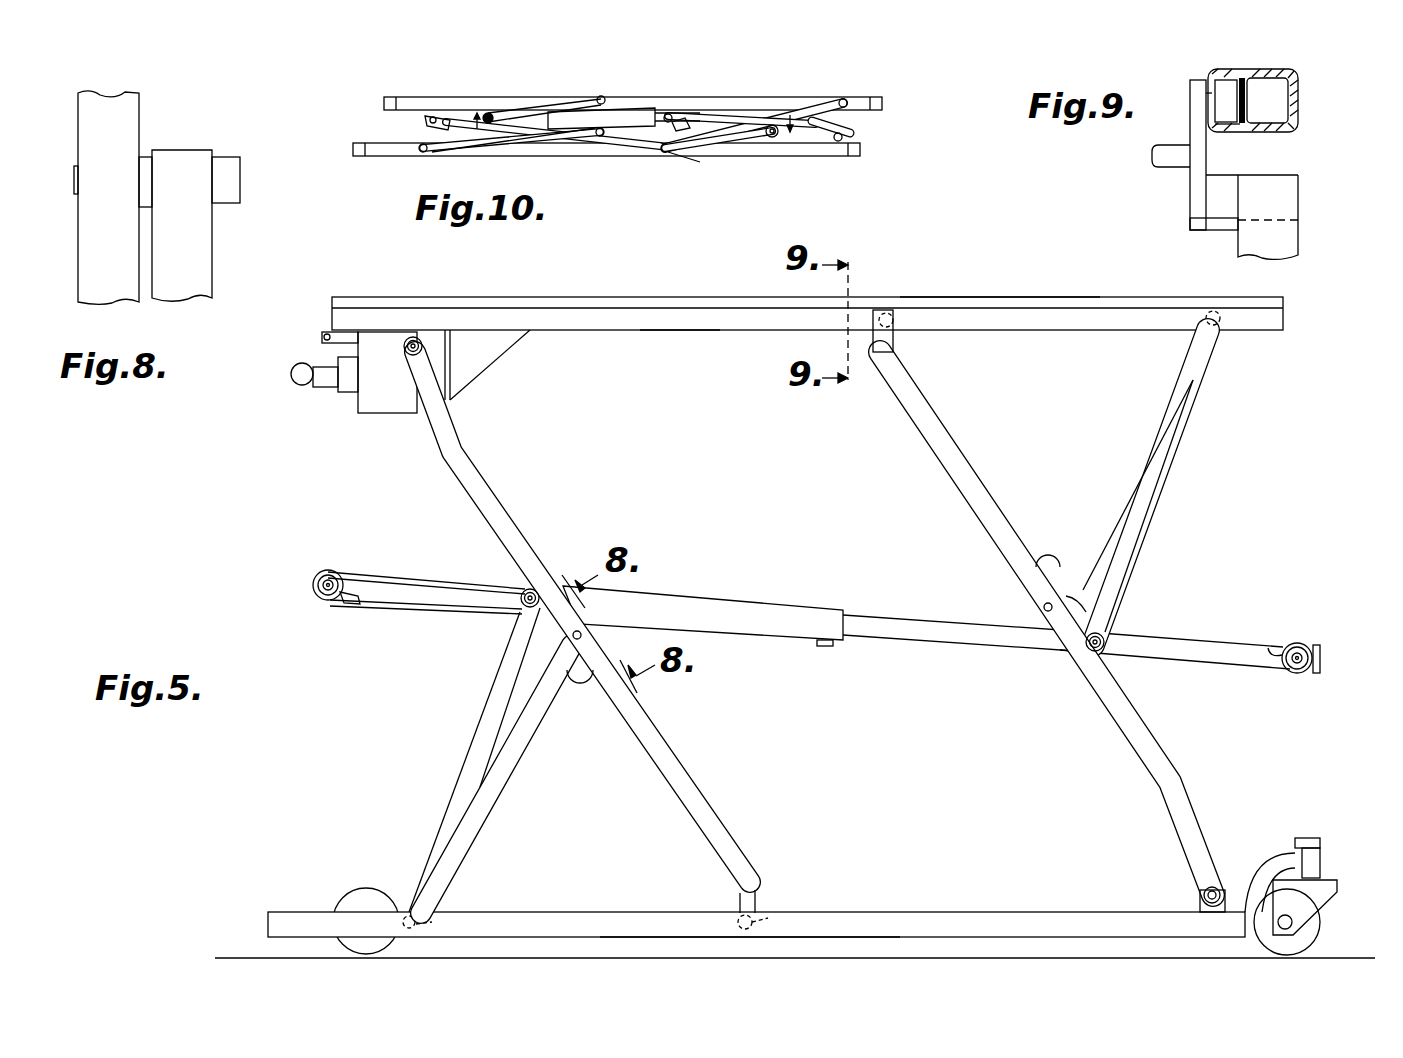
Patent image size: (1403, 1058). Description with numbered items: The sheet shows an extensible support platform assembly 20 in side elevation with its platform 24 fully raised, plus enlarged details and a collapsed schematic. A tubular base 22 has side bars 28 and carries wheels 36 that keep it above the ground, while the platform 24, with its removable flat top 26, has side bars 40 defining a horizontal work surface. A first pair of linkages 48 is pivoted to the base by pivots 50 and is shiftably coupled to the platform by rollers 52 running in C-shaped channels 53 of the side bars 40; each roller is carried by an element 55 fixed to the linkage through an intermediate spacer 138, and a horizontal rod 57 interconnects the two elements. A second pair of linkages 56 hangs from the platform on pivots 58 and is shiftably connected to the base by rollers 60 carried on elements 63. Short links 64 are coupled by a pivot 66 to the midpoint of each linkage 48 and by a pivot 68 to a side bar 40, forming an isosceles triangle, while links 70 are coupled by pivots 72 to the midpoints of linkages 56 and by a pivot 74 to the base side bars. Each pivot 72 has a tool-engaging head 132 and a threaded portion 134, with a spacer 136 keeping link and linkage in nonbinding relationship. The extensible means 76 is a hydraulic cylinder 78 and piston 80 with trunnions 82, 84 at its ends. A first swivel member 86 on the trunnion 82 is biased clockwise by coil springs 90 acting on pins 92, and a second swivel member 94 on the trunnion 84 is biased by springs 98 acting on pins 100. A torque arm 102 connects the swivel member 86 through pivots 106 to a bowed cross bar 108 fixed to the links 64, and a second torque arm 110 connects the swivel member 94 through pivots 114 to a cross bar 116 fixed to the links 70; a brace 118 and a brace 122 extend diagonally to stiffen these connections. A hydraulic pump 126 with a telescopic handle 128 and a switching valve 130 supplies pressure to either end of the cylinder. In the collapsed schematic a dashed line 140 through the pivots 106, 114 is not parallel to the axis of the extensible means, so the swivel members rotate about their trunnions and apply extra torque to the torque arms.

In FIG. 10, the extensible support platform assembly 20 is at (893, 84).
In FIG. 5, the extensible support platform assembly 20 is at (228, 538).
In FIG. 10, the base 22 is at (353, 150).
In FIG. 5, the base 22 is at (266, 912).
In FIG. 10, the platform 24 is at (384, 103).
In FIG. 5, the platform 24 is at (462, 297).
In FIG. 5, the removable flat top 26 is at (1012, 297).
In FIG. 5, the side bars 28 is at (922, 912).
In FIG. 5, the wheels 36 is at (366, 896).
In FIG. 9, the side bars 40 is at (1299, 100).
In FIG. 5, the side bars 40 is at (690, 330).
In FIG. 10, the linkages 48 is at (852, 126).
In FIG. 9, the linkages 48 is at (1290, 227).
In FIG. 5, the linkages 48 is at (945, 475).
In FIG. 10, the pivots 50 is at (845, 138).
In FIG. 5, the pivots 50 is at (1202, 895).
In FIG. 9, the rollers 52 is at (1226, 84).
In FIG. 5, the rollers 52 is at (886, 308).
In FIG. 9, the C-shaped channels 53 is at (1222, 132).
In FIG. 9, the elements 55 is at (1192, 184).
In FIG. 5, the elements 55 is at (892, 342).
In FIG. 8, the linkages 56 is at (123, 100).
In FIG. 10, the linkages 56 is at (445, 118).
In FIG. 5, the linkages 56 is at (485, 478).
In FIG. 9, the horizontal rod 57 is at (1153, 156).
In FIG. 10, the pivots 58 is at (426, 120).
In FIG. 5, the pivots 58 is at (423, 346).
In FIG. 5, the rollers 60 is at (770, 912).
In FIG. 5, the elements 63 is at (738, 896).
In FIG. 10, the links 64 is at (738, 108).
In FIG. 5, the links 64 is at (1125, 460).
In FIG. 10, the pivot 66 is at (668, 114).
In FIG. 5, the pivot 66 is at (1043, 606).
In FIG. 10, the pivot 68 is at (843, 99).
In FIG. 5, the pivot 68 is at (1222, 330).
In FIG. 8, the links 70 is at (200, 270).
In FIG. 10, the links 70 is at (509, 148).
In FIG. 5, the links 70 is at (520, 762).
In FIG. 8, the pivots 72 is at (228, 157).
In FIG. 10, the pivots 72 is at (600, 137).
In FIG. 5, the pivots 72 is at (582, 635).
In FIG. 10, the pivot 74 is at (424, 152).
In FIG. 5, the pivot 74 is at (455, 912).
In FIG. 10, the extensible means 76 is at (628, 108).
In FIG. 5, the extensible means 76 is at (819, 609).
In FIG. 5, the cylinder 78 is at (770, 633).
In FIG. 5, the piston 80 is at (930, 640).
In FIG. 10, the trunnion 82 is at (772, 138).
In FIG. 5, the trunnion 82 is at (1296, 672).
In FIG. 10, the trunnion 84 is at (489, 113).
In FIG. 5, the trunnion 84 is at (313, 586).
In FIG. 10, the first elongated swivel member 86 is at (725, 150).
In FIG. 5, the first elongated swivel member 86 is at (1185, 656).
In FIG. 5, the coil springs 90 is at (1310, 648).
In FIG. 5, the pins 92 is at (1272, 645).
In FIG. 10, the second elongated swivel member 94 is at (516, 112).
In FIG. 5, the second elongated swivel member 94 is at (440, 614).
In FIG. 5, the springs 98 is at (329, 570).
In FIG. 5, the pins 100 is at (352, 604).
In FIG. 10, the torque arm 102 is at (686, 120).
In FIG. 5, the torque arm 102 is at (1085, 598).
In FIG. 10, the pivots 106 is at (665, 152).
In FIG. 5, the pivots 106 is at (1104, 650).
In FIG. 5, the cross bar 108 is at (1050, 553).
In FIG. 10, the second torque arm 110 is at (578, 134).
In FIG. 5, the second torque arm 110 is at (520, 650).
In FIG. 10, the pivots 114 is at (601, 96).
In FIG. 5, the pivots 114 is at (515, 592).
In FIG. 5, the cross bar 116 is at (580, 686).
In FIG. 5, the brace 118 is at (1155, 492).
In FIG. 5, the brace 122 is at (489, 714).
In FIG. 5, the hydraulic pump 126 is at (345, 420).
In FIG. 5, the handle 128 is at (292, 372).
In FIG. 5, the switching valve 130 is at (322, 336).
In FIG. 8, the head 132 is at (224, 195).
In FIG. 8, the threaded portion 134 is at (74, 190).
In FIG. 8, the spacer 136 is at (143, 157).
In FIG. 9, the spacer 138 is at (1206, 94).
In FIG. 10, the dashed line 140 is at (697, 168).